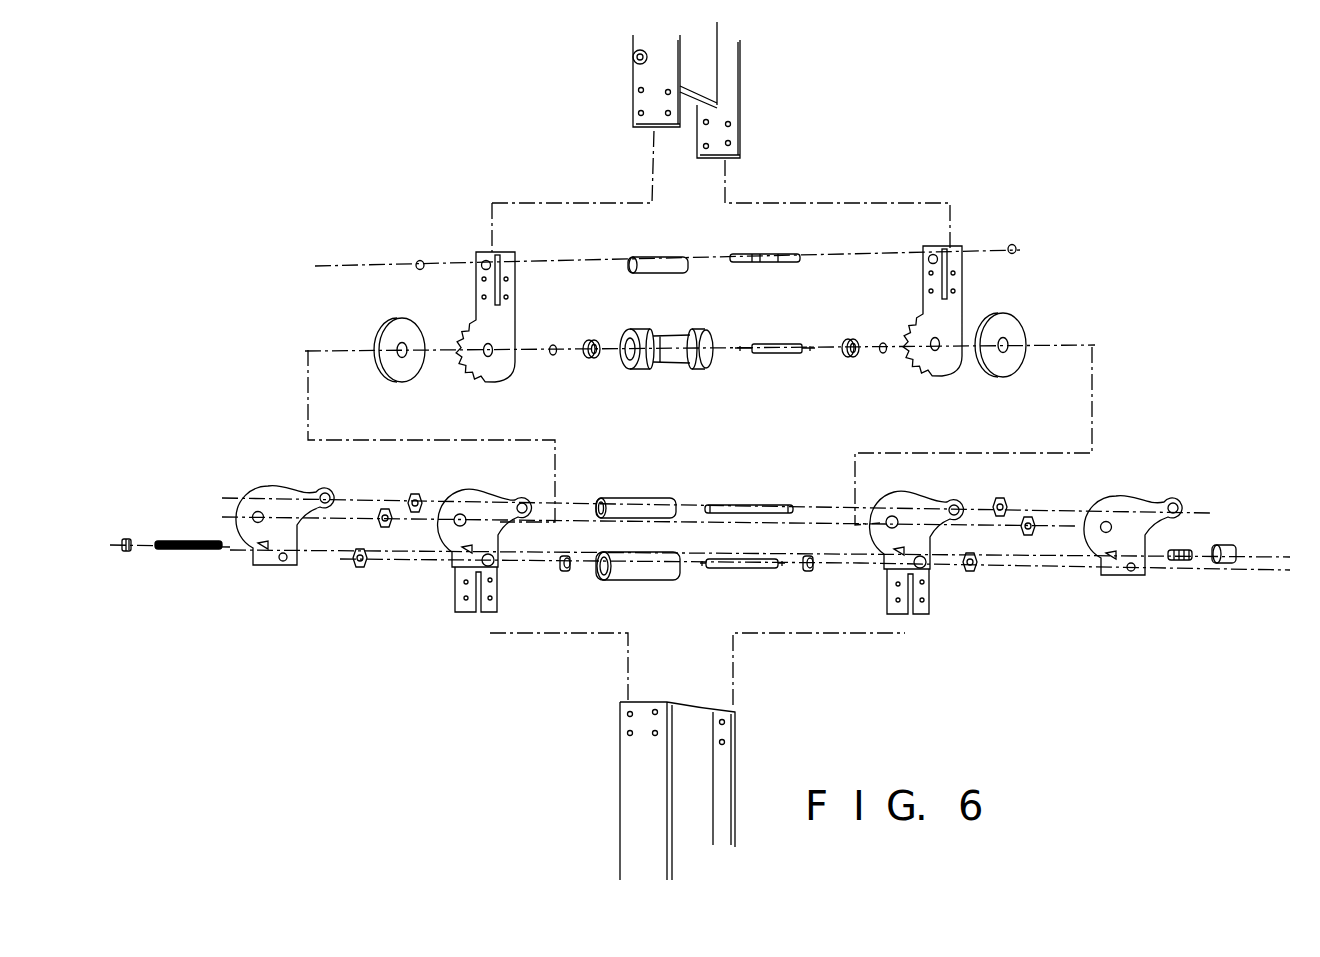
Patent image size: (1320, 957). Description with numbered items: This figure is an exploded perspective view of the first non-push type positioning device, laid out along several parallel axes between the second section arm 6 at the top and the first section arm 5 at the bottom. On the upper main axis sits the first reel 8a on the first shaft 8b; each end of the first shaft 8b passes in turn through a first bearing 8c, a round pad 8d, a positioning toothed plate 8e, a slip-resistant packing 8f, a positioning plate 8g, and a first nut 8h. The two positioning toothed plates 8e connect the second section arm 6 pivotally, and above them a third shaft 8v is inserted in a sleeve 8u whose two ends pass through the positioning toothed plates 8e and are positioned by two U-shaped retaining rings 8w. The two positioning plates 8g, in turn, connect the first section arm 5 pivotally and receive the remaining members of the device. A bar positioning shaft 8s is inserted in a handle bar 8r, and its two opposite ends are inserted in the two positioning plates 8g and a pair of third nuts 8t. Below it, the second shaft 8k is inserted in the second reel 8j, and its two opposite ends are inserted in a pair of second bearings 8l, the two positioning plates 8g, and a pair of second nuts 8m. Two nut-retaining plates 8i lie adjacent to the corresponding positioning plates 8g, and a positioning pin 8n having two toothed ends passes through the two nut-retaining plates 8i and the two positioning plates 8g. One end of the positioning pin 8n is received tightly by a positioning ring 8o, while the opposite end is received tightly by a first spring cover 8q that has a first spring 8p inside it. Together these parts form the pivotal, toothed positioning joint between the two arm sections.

The first section arm 5 is at (632, 815).
The second section arm 6 is at (730, 78).
The first reel 8a is at (668, 335).
The first shaft 8b is at (775, 345).
The first bearings 8c is at (592, 340).
The pads 8d is at (551, 345).
The positioning toothed plates 8e is at (486, 256).
The slip-resistant packings 8f is at (385, 337).
The positioning plates 8g is at (470, 490).
The first nuts 8h is at (380, 513).
The nut-retaining plates 8i is at (262, 483).
The second reel 8j is at (640, 574).
The second shaft 8k is at (745, 570).
The second bearings 8l is at (562, 571).
The second nuts 8m is at (358, 568).
The positioning pin 8n is at (202, 552).
The positioning ring 8o is at (99, 573).
The first spring 8p is at (1190, 550).
The first spring cover 8q is at (1238, 548).
The handle bar 8r is at (626, 504).
The bar positioning shaft 8s is at (760, 507).
The third nuts 8t is at (411, 499).
The sleeve 8u is at (653, 258).
The third shaft 8v is at (762, 257).
The U-shaped retaining rings 8w is at (417, 261).